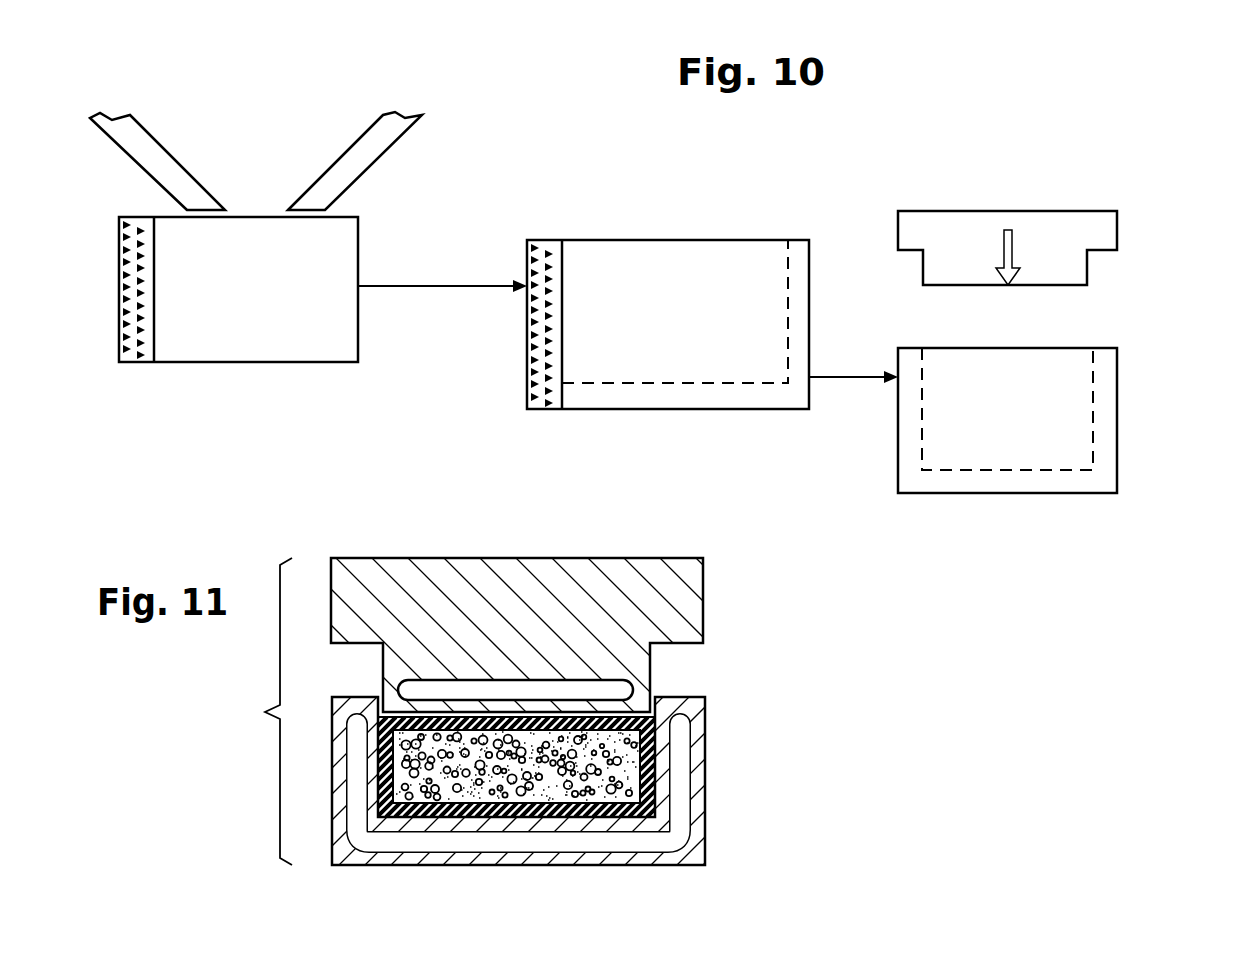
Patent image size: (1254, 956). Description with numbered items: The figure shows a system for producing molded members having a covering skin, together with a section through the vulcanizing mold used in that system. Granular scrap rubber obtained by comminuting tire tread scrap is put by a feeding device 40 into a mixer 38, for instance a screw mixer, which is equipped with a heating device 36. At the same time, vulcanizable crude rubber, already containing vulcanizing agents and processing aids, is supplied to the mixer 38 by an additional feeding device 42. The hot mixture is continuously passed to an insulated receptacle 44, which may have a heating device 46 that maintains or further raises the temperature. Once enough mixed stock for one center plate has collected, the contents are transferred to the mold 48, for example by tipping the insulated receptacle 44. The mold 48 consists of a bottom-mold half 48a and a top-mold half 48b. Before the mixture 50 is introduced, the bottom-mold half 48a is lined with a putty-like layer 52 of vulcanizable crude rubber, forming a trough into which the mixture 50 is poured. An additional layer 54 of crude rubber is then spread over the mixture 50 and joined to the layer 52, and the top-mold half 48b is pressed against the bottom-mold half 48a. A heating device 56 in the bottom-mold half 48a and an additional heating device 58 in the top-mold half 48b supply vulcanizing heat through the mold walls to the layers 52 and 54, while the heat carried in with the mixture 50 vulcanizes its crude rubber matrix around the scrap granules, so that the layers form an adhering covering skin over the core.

In FIG. 10, the heating device 36 is at (122, 287).
In FIG. 10, the mixer 38 is at (257, 340).
In FIG. 10, the feeding device 40 is at (336, 162).
In FIG. 10, the additional feeding device 42 is at (177, 163).
In FIG. 10, the insulated receptacle 44 is at (667, 263).
In FIG. 10, the heating device 46 is at (537, 323).
In FIG. 10, the mold 48 is at (1143, 339).
In FIG. 11, the mold 48 is at (260, 711).
In FIG. 10, the bottom-mold half 48a is at (1040, 485).
In FIG. 11, the bottom-mold half 48a is at (700, 770).
In FIG. 10, the top-mold half 48b is at (1110, 234).
In FIG. 11, the top-mold half 48b is at (693, 590).
In FIG. 11, the mixture 50 is at (520, 808).
In FIG. 11, the layer 52 is at (427, 808).
In FIG. 11, the additional layer 54 is at (658, 724).
In FIG. 11, the heating device 56 is at (617, 840).
In FIG. 11, the additional heating device 58 is at (612, 690).